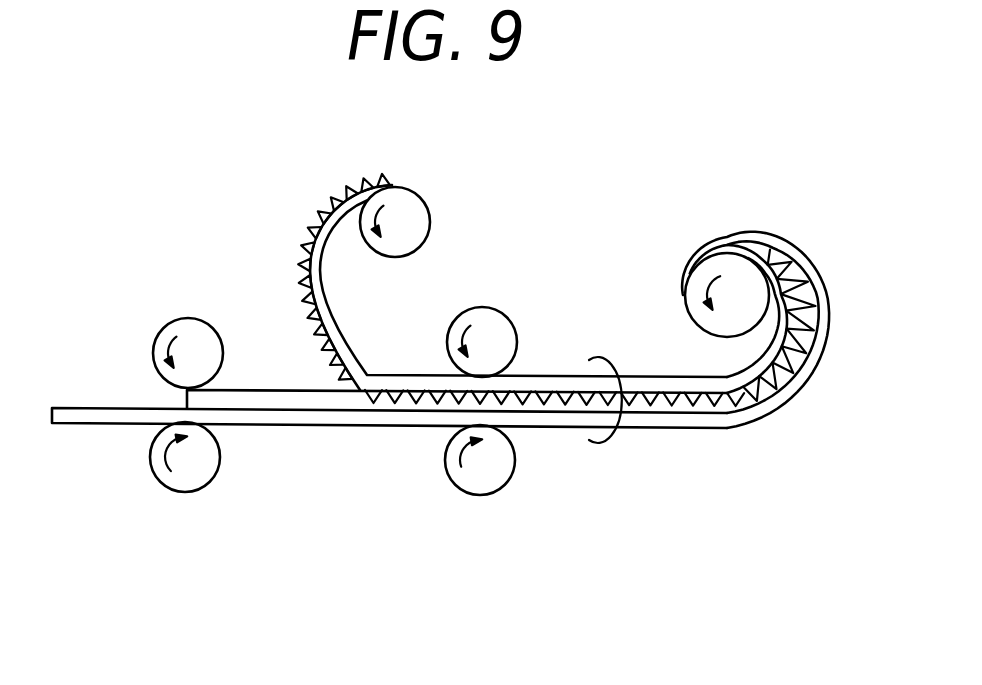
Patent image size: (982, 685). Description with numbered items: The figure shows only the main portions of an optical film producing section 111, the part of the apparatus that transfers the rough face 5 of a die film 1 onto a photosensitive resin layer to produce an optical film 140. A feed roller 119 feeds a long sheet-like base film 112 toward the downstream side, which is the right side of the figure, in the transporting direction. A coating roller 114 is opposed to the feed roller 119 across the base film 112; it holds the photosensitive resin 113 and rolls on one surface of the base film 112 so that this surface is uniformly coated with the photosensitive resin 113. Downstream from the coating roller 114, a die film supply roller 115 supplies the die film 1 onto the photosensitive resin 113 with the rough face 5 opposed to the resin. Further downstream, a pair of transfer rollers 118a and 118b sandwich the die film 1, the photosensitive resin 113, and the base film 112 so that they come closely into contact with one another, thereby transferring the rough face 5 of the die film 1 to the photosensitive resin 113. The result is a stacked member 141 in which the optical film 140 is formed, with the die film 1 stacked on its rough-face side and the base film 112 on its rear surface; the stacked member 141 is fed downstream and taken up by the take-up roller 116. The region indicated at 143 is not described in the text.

The die film 1 is at (533, 342).
The rough face 5 is at (312, 233).
The optical film producing section 111 is at (703, 168).
The base film 112 is at (90, 418).
The photosensitive resin 113 is at (257, 398).
The coating roller 114 is at (192, 342).
The die film supply roller 115 is at (407, 207).
The take-up roller 116 is at (717, 308).
The transfer roller 118a is at (490, 323).
The transfer roller 118b is at (480, 478).
The feed roller 119 is at (192, 475).
The optical film 140 is at (659, 402).
The stacked member 141 is at (600, 443).
The engaging element portion 143 is at (548, 397).